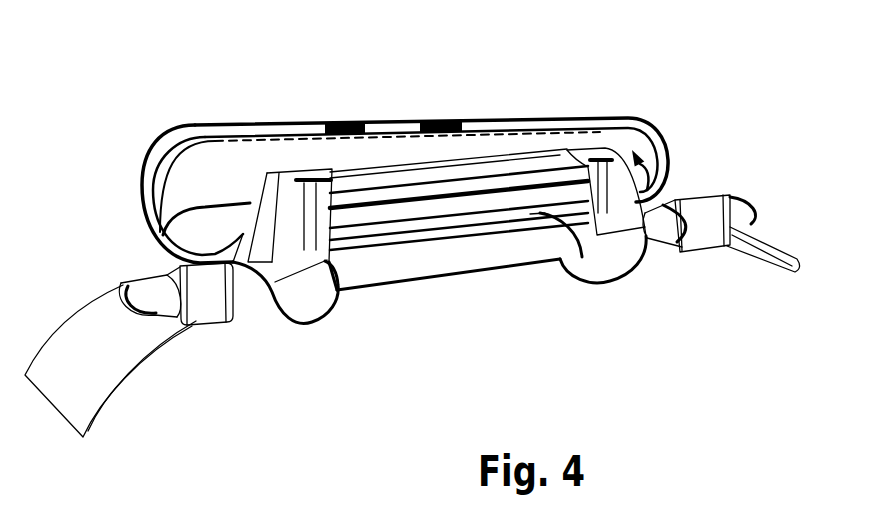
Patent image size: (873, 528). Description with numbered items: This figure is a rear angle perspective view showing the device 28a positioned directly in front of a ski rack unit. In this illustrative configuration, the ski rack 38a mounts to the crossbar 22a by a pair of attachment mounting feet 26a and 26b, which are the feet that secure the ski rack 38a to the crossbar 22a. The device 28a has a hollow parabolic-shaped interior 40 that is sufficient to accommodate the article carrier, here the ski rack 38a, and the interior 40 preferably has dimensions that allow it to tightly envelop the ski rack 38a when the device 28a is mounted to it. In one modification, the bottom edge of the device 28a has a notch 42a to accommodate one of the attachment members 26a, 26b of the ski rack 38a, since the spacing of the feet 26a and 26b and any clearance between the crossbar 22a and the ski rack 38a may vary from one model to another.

The crossbar 22a is at (517, 254).
The attachment mounting foot 26a is at (613, 267).
The attachment mounting foot 26b is at (318, 292).
The device 28a is at (395, 80).
The ski rack 38a is at (388, 202).
The hollow parabolic-shaped interior 40 is at (650, 169).
The notch 42a is at (228, 232).